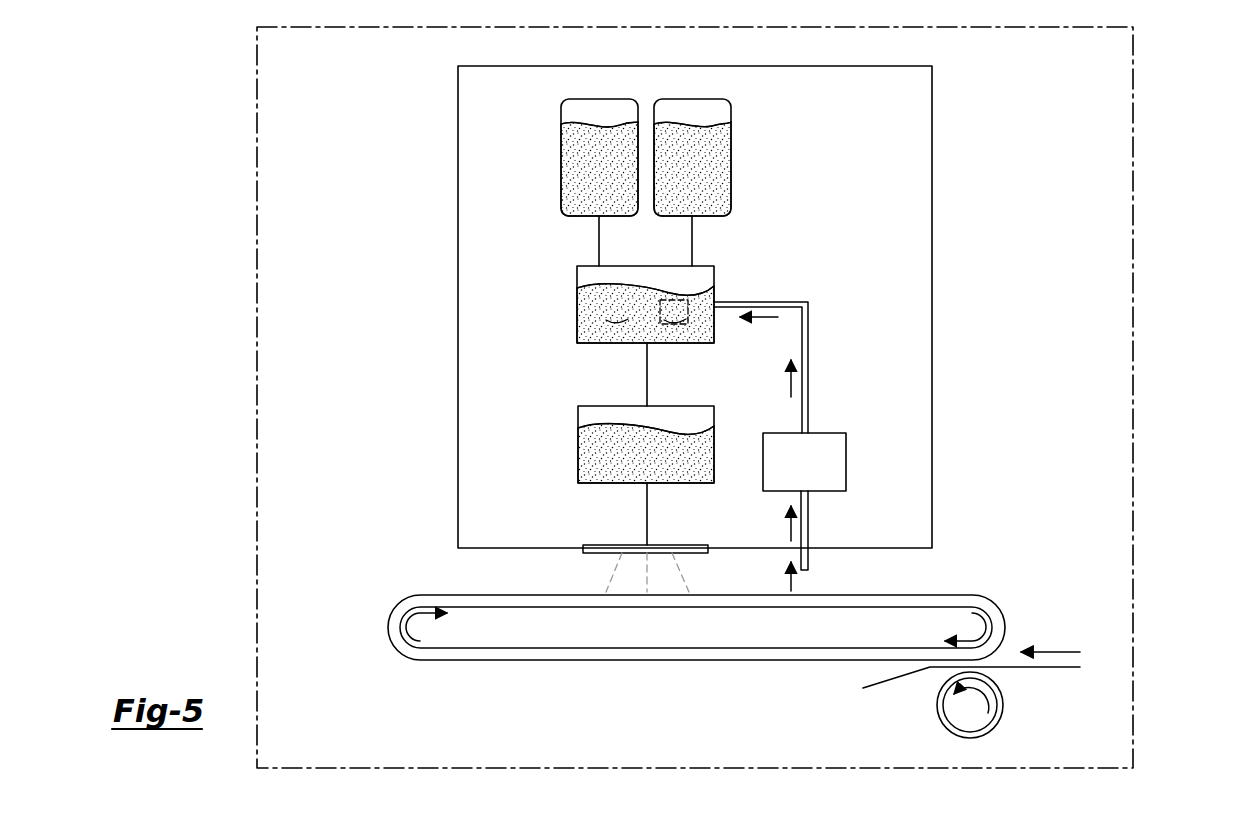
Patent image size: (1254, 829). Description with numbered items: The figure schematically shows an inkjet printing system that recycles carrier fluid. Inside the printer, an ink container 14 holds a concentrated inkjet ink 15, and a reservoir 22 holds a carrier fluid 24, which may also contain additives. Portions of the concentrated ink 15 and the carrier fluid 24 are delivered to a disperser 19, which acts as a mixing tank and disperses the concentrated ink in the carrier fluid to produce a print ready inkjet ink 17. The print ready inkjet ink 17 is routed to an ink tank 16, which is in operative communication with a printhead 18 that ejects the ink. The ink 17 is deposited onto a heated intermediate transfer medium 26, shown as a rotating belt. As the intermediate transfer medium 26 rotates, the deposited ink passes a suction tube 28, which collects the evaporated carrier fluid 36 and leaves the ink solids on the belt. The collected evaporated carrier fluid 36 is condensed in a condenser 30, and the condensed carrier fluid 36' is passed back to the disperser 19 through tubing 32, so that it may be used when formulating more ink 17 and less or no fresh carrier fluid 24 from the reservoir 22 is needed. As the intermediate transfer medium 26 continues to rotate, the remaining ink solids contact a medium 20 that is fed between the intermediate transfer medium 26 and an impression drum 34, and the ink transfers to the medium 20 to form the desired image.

The ink container 14 is at (561, 115).
The concentrated inkjet ink 15 is at (582, 178).
The reservoir 22 is at (731, 115).
The carrier fluid 24 is at (712, 178).
The disperser 19 is at (577, 305).
The ink tank 16 is at (578, 418).
The print ready inkjet ink 17 is at (596, 459).
The printhead 18 is at (596, 551).
The tubing 32 is at (767, 300).
The condensed carrier fluid 36' is at (766, 378).
The condenser 30 is at (835, 466).
The suction tube 28 is at (808, 561).
The evaporated carrier fluid 36 is at (767, 576).
The intermediate transfer medium 26 is at (390, 630).
The medium 20 is at (1060, 667).
The impression drum 34 is at (1004, 702).